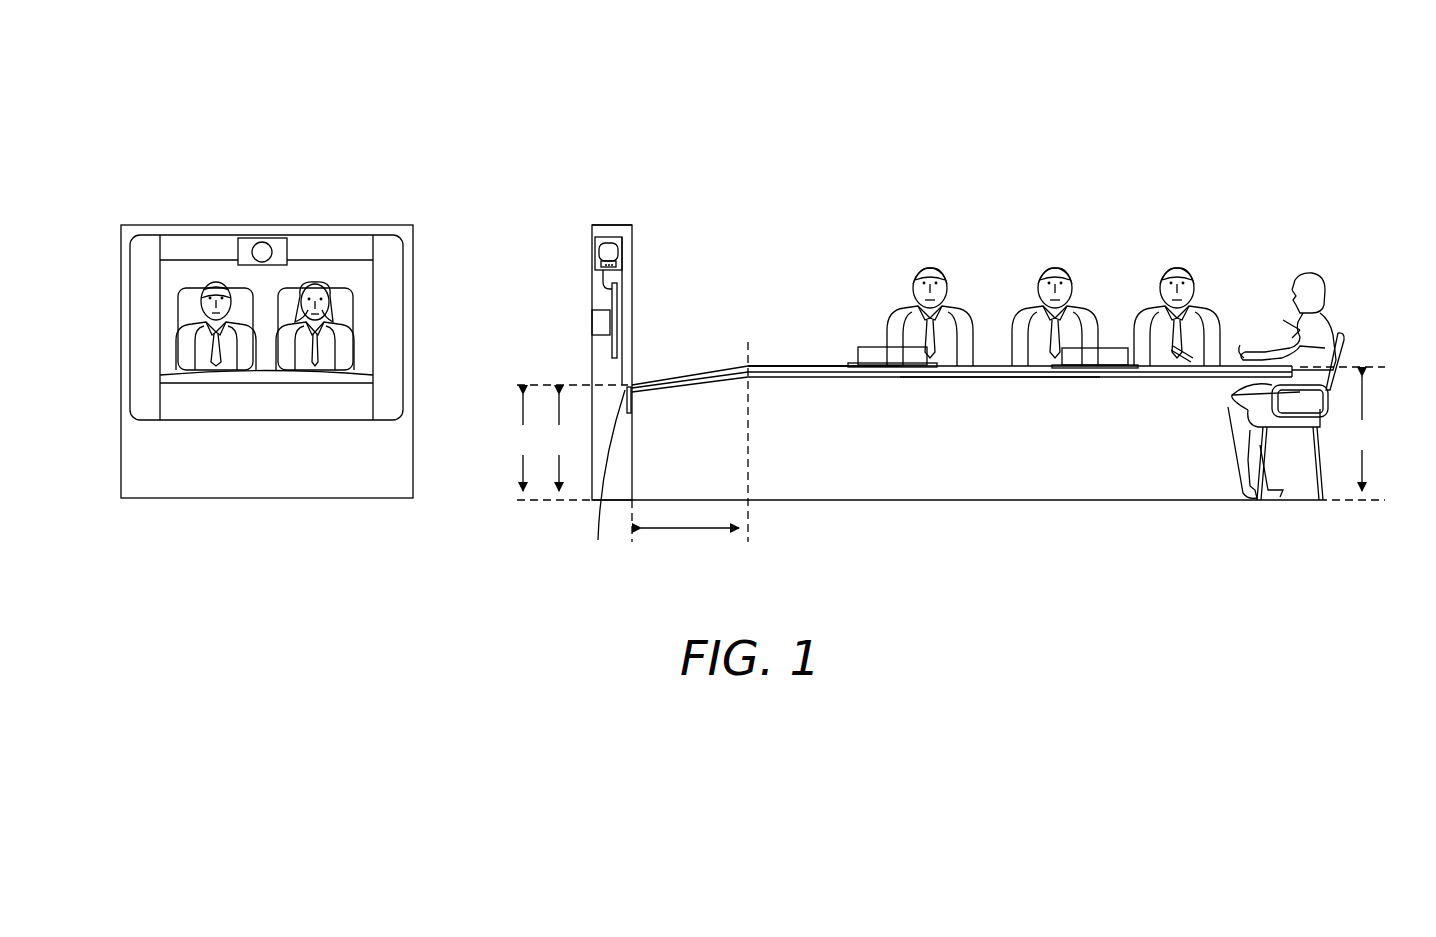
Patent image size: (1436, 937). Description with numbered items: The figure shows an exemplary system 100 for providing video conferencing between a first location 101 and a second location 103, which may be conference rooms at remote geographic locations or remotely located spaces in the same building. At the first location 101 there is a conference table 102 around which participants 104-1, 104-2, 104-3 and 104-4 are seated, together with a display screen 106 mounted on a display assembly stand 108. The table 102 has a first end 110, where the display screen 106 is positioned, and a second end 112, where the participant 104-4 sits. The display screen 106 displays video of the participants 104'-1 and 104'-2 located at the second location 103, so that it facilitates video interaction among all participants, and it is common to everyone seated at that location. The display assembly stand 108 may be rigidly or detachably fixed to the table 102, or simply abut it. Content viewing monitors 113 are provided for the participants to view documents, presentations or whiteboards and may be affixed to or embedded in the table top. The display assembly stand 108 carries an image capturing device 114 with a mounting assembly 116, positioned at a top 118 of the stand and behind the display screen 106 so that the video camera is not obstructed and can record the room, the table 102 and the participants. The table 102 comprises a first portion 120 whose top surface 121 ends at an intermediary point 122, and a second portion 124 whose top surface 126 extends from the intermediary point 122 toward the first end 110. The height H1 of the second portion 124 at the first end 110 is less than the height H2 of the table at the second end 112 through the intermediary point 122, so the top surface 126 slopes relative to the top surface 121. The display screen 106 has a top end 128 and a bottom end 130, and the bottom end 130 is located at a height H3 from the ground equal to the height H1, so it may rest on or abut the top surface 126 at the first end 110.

The system 100 is at (1215, 78).
The first location 101 is at (976, 122).
The conference table 102 is at (995, 382).
The second location 103 is at (265, 122).
The participant 104-1 is at (940, 270).
The participant 104-2 is at (1062, 270).
The participant 104-3 is at (1188, 270).
The participant 104-4 is at (1328, 270).
The participant at second location 104'-1 is at (197, 270).
The participant at second location 104'-2 is at (337, 270).
The display screen 106 is at (638, 281).
The display assembly stand 108 is at (587, 274).
The first end 110 is at (641, 394).
The second end 112 is at (1228, 389).
The content viewing monitors 113 is at (912, 360).
The image capturing device 114 is at (617, 237).
The mounting assembly 116 is at (603, 288).
The top 118 is at (600, 220).
The first portion 120 is at (862, 446).
The top surface 121 is at (833, 360).
The intermediary point 122 is at (750, 365).
The second portion 124 is at (684, 484).
The top surface 126 is at (705, 367).
The top end 128 is at (627, 252).
The bottom end 130 is at (602, 478).
The height H1 is at (559, 442).
The height H2 is at (1342, 433).
The height H3 is at (569, 442).